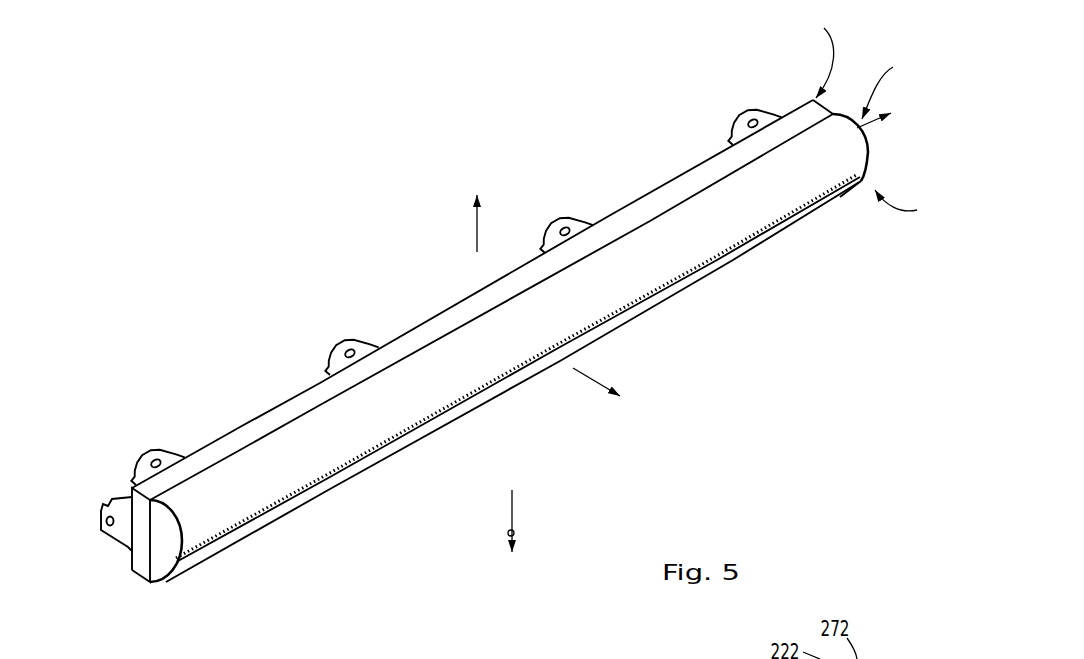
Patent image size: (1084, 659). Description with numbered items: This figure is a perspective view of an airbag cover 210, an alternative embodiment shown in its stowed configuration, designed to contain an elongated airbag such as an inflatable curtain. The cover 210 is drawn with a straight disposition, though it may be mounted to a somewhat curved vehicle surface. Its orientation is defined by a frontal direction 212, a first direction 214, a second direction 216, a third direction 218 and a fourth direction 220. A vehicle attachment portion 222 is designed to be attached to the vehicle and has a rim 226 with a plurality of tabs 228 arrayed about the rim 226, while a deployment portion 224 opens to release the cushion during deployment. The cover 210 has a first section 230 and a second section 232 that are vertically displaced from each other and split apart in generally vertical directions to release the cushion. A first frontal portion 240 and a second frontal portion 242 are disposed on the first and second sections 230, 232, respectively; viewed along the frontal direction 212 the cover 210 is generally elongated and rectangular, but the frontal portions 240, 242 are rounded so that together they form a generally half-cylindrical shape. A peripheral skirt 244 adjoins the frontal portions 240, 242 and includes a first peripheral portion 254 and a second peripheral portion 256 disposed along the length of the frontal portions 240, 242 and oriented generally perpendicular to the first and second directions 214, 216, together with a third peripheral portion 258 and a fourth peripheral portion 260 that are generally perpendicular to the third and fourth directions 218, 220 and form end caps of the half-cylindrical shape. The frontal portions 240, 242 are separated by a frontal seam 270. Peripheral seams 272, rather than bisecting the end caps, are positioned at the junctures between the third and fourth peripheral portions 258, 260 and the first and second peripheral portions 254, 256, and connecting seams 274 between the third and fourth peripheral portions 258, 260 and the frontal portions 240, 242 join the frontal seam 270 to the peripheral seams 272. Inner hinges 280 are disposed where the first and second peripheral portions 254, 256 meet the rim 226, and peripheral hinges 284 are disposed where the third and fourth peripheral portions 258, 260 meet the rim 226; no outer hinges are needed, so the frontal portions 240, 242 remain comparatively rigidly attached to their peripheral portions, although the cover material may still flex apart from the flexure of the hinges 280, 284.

The cover 210 is at (303, 257).
The frontal direction 212 is at (573, 368).
The first direction 214 is at (476, 223).
The second direction 216 is at (513, 515).
The third direction 218 is at (147, 578).
The fourth direction 220 is at (883, 117).
The vehicle attachment portion 222 is at (816, 52).
The deployment portion 224 is at (910, 206).
The rim 226 is at (650, 202).
The tabs 228 is at (108, 505).
The first section 230 is at (279, 424).
The second section 232 is at (274, 538).
The first frontal portion 240 is at (340, 462).
The second frontal portion 242 is at (326, 492).
The peripheral skirt 244 is at (893, 84).
The first peripheral portion 254 is at (463, 353).
The second peripheral portion 256 is at (410, 450).
The third peripheral portion 258 is at (146, 552).
The fourth peripheral portion 260 is at (865, 190).
The frontal seam 270 is at (675, 282).
The peripheral seams 272 is at (173, 513).
The connecting seams 274 is at (180, 537).
The inner hinges 280 is at (618, 230).
The peripheral hinges 284 is at (132, 490).